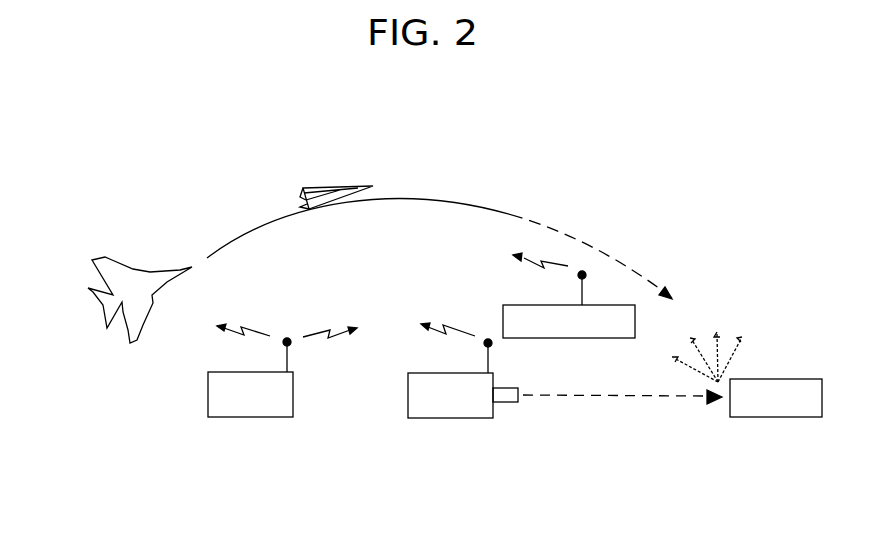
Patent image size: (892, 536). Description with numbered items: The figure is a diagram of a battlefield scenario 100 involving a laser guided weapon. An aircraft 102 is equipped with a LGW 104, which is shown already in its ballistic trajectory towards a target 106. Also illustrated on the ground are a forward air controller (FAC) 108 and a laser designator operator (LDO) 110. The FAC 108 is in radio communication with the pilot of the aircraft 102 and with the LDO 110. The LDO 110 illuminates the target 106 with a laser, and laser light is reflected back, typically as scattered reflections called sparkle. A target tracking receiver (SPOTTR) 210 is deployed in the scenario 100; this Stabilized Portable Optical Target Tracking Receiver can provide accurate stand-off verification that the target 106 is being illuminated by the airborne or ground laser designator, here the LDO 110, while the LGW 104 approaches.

The battlefield scenario 100 is at (252, 123).
The aircraft 102 is at (118, 259).
The LGW 104 is at (330, 187).
The target 106 is at (740, 417).
The forward air controller (FAC) 108 is at (222, 417).
The laser designator operator (LDO) 110 is at (422, 418).
The target tracking receiver (SPOTTR) 210 is at (525, 305).